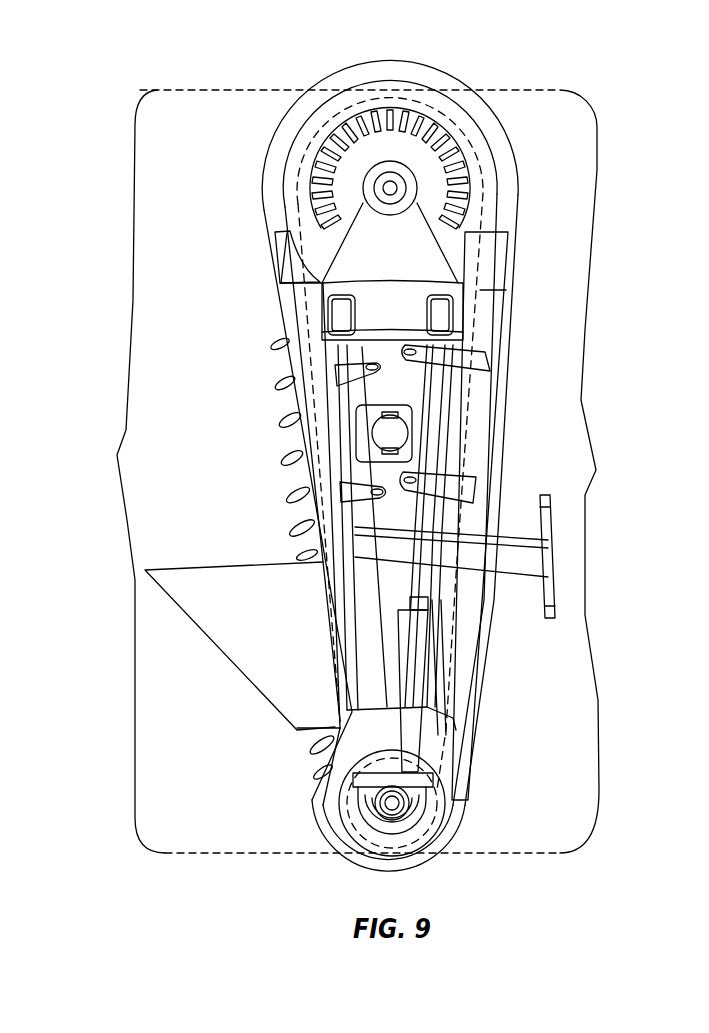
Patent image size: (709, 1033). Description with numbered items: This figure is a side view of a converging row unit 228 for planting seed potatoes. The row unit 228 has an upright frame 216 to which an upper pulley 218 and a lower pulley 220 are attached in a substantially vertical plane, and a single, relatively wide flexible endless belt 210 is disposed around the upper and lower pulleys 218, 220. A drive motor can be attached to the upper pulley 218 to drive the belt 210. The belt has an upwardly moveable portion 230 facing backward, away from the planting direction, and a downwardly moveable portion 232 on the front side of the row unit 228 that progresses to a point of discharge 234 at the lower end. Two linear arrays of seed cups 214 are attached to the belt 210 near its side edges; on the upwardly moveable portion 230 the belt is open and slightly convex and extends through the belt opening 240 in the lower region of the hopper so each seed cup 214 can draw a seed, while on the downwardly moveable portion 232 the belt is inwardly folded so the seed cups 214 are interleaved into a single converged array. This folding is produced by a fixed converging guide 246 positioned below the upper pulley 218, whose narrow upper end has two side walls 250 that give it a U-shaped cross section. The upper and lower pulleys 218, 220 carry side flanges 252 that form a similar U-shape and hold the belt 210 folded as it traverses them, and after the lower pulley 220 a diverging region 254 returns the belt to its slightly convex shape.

The flexible endless belt 210 is at (275, 331).
The seed cups 214 is at (290, 492).
The upright frame 216 is at (497, 548).
The upper pulley 218 is at (427, 153).
The lower pulley 220 is at (355, 823).
The converging row unit 228 is at (349, 480).
The upwardly moveable portion 230 is at (314, 471).
The downwardly moveable portion 232 is at (602, 471).
The point of discharge 234 is at (445, 873).
The belt opening 240 is at (300, 735).
The converging guide 246 is at (295, 325).
The side walls 250 is at (295, 325).
The side flanges 252 is at (334, 74).
The diverging region 254 is at (366, 856).